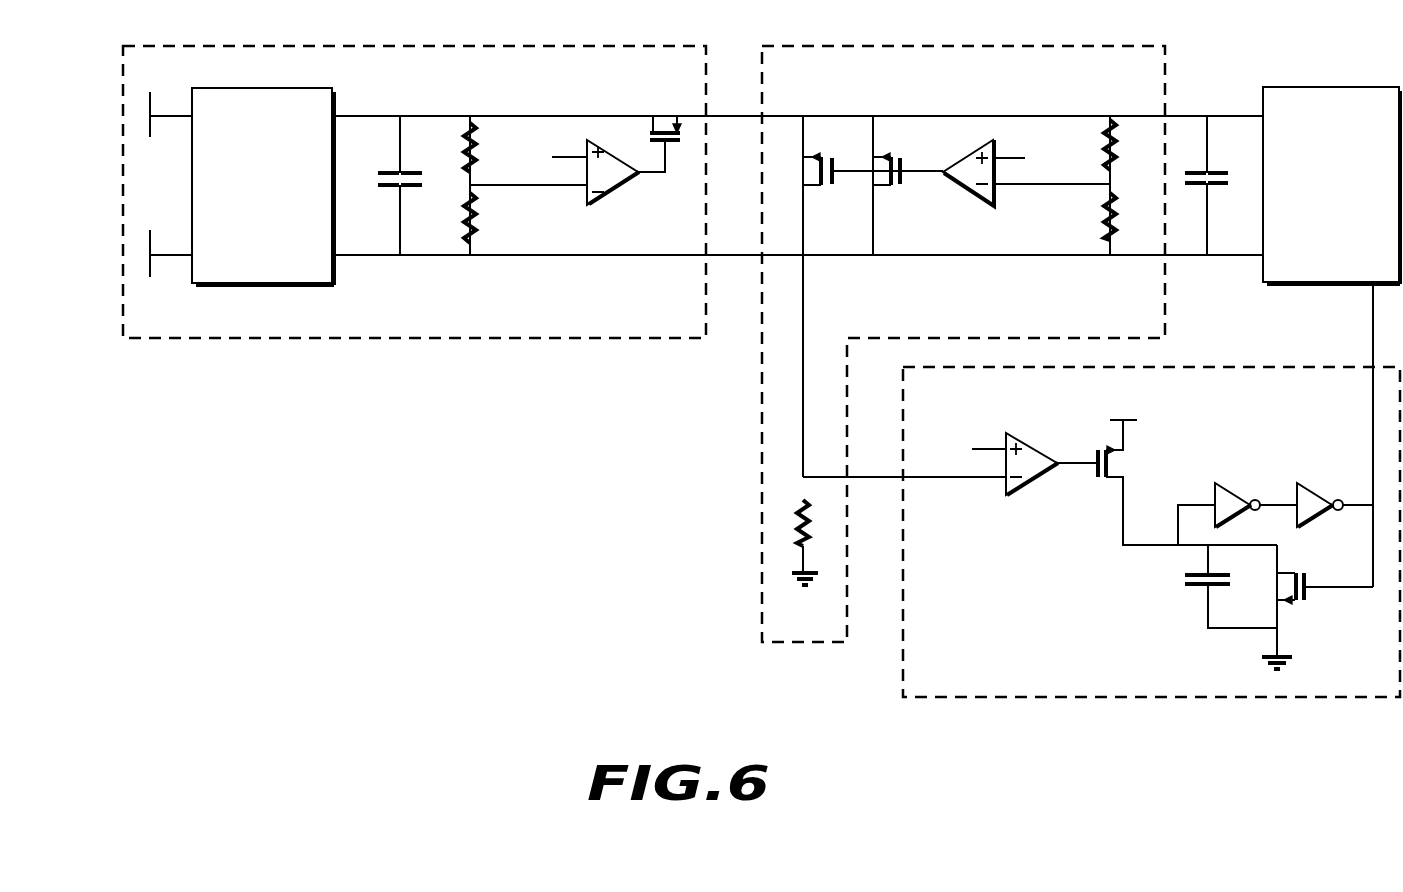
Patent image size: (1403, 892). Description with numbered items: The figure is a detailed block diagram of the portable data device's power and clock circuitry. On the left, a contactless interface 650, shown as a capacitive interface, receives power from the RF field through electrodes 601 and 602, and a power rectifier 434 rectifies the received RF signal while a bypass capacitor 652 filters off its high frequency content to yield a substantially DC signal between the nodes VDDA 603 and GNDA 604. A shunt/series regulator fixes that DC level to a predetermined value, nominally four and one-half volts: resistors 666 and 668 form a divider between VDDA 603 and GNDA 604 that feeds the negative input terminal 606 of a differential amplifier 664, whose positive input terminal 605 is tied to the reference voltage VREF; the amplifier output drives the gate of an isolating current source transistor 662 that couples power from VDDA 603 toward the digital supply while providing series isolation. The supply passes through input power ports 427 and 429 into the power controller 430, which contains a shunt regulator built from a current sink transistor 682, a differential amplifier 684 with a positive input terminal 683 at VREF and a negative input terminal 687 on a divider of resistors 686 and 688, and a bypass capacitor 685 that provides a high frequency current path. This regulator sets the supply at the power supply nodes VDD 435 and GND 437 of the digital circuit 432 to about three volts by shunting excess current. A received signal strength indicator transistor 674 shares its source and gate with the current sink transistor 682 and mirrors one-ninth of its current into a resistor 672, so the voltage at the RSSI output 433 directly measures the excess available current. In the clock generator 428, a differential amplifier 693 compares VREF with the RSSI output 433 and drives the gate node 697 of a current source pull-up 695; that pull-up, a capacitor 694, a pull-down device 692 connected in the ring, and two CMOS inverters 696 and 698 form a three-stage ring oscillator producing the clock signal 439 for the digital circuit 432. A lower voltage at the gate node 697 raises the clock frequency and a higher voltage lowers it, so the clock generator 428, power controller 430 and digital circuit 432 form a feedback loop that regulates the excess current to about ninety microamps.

The electrode 601 is at (152, 95).
The electrode 602 is at (152, 233).
The power rectifier 434 is at (280, 88).
The contactless interface 650 is at (335, 340).
The bypass capacitor 652 is at (392, 172).
The VDDA node 603 is at (497, 116).
The GNDA node 604 is at (612, 257).
The positive input terminal 605 is at (570, 157).
The negative input terminal 606 is at (552, 188).
The resistor 666 is at (463, 152).
The resistor 668 is at (463, 234).
The differential amplifier 664 is at (633, 192).
The isolating current source transistor 662 is at (663, 128).
The input power port 427 is at (736, 114).
The input power port 429 is at (733, 258).
The power controller 430 is at (1046, 45).
The RSSI transistor 674 is at (828, 190).
The current sink transistor 682 is at (898, 190).
The differential amplifier 684 is at (965, 148).
The positive input terminal 683 is at (1010, 157).
The negative input terminal 687 is at (1050, 186).
The resistor 686 is at (1118, 155).
The resistor 688 is at (1118, 224).
The VDD power supply node 435 is at (1207, 114).
The GND power supply node 437 is at (1207, 257).
The bypass capacitor 685 is at (1215, 190).
The digital circuit 432 is at (1338, 87).
The clock signal 439 is at (1373, 325).
The resistor 672 is at (797, 528).
The RSSI output 433 is at (880, 479).
The clock generator 428 is at (1018, 697).
The differential amplifier 693 is at (1026, 444).
The gate node 697 is at (1075, 466).
The current source pull-up 695 is at (1112, 460).
The CMOS inverter 696 is at (1233, 487).
The CMOS inverter 698 is at (1317, 487).
The capacitor 694 is at (1190, 588).
The pull-down device 692 is at (1305, 602).